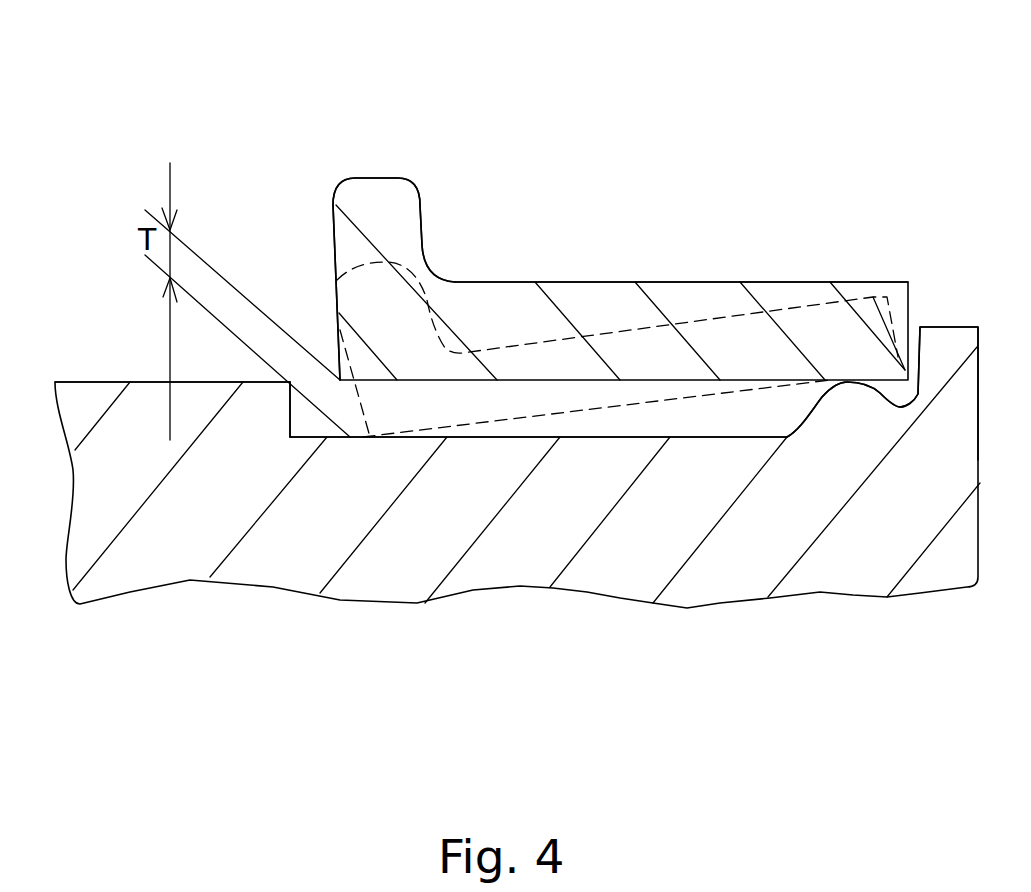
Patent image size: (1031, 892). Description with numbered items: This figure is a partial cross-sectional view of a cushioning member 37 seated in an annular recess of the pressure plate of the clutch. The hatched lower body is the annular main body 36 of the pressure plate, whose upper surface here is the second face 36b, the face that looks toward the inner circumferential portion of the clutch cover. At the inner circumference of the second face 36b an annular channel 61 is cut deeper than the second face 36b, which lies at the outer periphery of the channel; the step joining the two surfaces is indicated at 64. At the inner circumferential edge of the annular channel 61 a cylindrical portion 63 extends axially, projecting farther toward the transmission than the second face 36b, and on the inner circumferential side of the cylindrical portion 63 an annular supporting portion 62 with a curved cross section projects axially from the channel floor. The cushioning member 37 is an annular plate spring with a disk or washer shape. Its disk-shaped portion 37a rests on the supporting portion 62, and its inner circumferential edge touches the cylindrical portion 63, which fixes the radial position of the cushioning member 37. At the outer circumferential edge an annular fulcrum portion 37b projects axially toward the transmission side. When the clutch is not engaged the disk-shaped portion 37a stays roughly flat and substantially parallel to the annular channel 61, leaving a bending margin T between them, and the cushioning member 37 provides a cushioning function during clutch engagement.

The annular main body 36 is at (510, 570).
The second face 36b is at (93, 380).
The cushioning member 37 is at (641, 228).
The disk-shaped portion 37a is at (583, 312).
The annular fulcrum portion 37b is at (362, 190).
The annular channel 61 is at (697, 440).
The annular supporting portion 62 is at (848, 400).
The cylindrical portion 63 is at (943, 347).
The step side wall of groove 64 is at (292, 407).